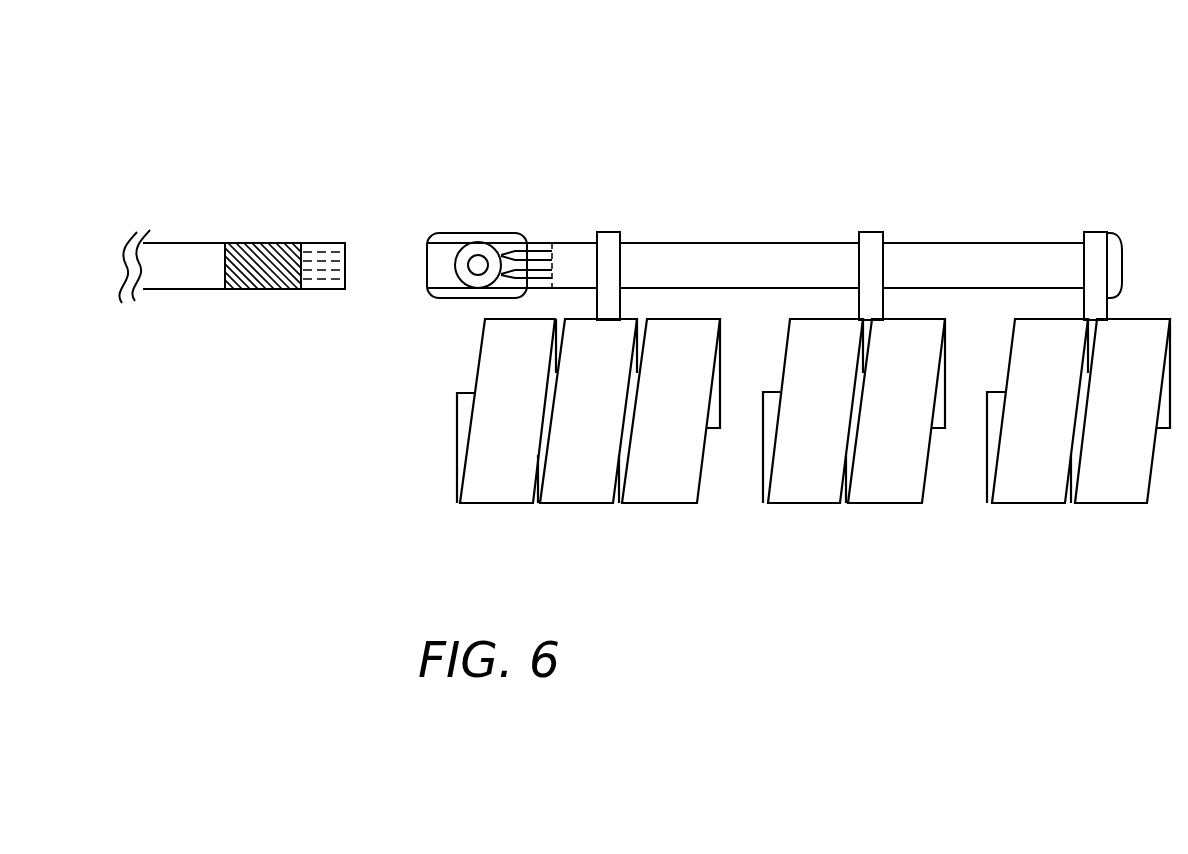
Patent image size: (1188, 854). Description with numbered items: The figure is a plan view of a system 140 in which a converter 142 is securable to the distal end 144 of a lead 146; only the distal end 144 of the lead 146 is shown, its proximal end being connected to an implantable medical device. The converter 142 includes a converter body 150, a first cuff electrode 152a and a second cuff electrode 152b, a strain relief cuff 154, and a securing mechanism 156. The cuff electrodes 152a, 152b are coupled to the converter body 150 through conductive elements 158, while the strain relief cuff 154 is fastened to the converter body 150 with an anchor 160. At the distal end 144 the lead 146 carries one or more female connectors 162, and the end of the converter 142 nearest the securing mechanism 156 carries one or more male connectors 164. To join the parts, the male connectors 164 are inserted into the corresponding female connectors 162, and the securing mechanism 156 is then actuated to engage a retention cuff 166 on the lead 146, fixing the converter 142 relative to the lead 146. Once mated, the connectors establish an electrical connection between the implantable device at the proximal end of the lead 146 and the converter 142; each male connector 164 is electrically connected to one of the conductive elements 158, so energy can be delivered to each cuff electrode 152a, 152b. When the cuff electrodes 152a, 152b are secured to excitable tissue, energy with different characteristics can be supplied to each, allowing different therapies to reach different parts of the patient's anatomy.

The system 140 is at (1042, 128).
The converter 142 is at (458, 310).
The distal end 144 is at (330, 222).
The lead 146 is at (190, 243).
The converter body 150 is at (700, 258).
The cuff electrode 152a is at (811, 505).
The cuff electrode 152b is at (1034, 505).
The strain relief cuff 154 is at (497, 505).
The securing mechanism 156 is at (485, 252).
The conductive elements 158 is at (868, 232).
The anchor 160 is at (612, 232).
The female connectors 162 is at (322, 284).
The male connectors 164 is at (533, 245).
The retention cuff 166 is at (245, 243).